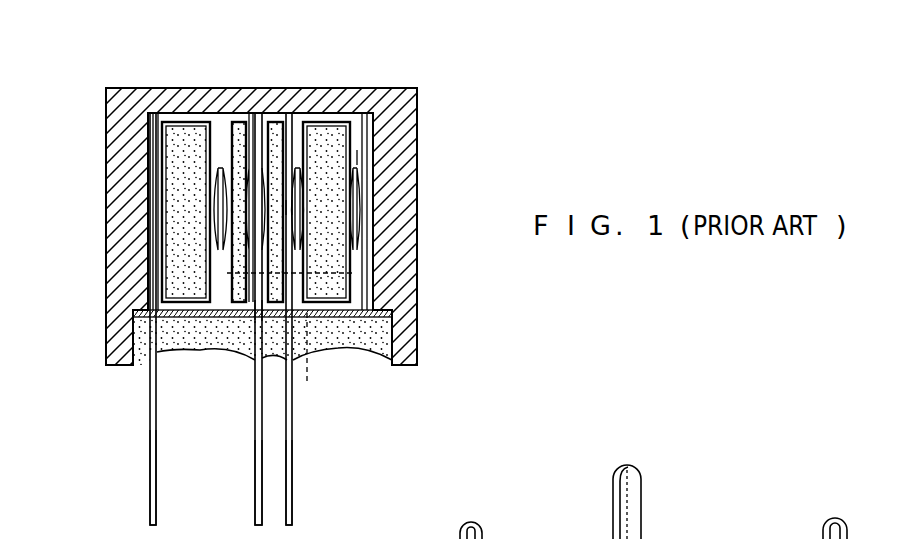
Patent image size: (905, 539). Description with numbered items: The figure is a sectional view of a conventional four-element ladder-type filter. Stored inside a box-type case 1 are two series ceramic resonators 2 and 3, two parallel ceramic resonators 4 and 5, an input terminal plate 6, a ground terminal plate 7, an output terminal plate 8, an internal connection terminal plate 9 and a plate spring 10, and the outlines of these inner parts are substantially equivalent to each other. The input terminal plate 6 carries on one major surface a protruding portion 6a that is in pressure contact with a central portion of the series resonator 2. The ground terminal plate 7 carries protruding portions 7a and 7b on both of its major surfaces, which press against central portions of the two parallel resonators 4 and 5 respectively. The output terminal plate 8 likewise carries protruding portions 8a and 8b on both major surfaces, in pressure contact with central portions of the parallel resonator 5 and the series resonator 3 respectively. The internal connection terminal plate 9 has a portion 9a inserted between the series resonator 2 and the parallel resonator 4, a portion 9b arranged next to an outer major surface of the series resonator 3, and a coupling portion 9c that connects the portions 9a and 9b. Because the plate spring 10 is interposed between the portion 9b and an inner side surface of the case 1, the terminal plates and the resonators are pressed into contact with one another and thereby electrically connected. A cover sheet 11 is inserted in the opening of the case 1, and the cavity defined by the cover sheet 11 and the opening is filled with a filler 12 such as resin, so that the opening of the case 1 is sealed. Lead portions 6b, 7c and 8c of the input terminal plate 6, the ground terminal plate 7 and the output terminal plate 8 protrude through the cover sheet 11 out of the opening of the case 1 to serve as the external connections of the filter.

The box-type case 1 is at (112, 192).
The series ceramic resonator 2 is at (184, 138).
The series ceramic resonator 3 is at (324, 119).
The parallel ceramic resonator 4 is at (238, 119).
The parallel ceramic resonator 5 is at (273, 119).
The input terminal plate 6 is at (147, 385).
The protruding portion 6a is at (147, 213).
The lead portion 6b is at (148, 424).
The ground terminal plate 7 is at (253, 476).
The protruding portion 7a is at (247, 222).
The protruding portion 7b is at (270, 195).
The lead portion 7c is at (255, 438).
The output terminal plate 8 is at (295, 487).
The protruding portion 8a is at (272, 182).
The protruding portion 8b is at (300, 207).
The lead portion 8c is at (292, 442).
The internal connection terminal plate 9 is at (355, 292).
The portion 9a is at (220, 262).
The portion 9b is at (357, 157).
The coupling portion 9c is at (317, 364).
The plate spring 10 is at (372, 233).
The cover sheet 11 is at (392, 347).
The filler 12 is at (339, 353).